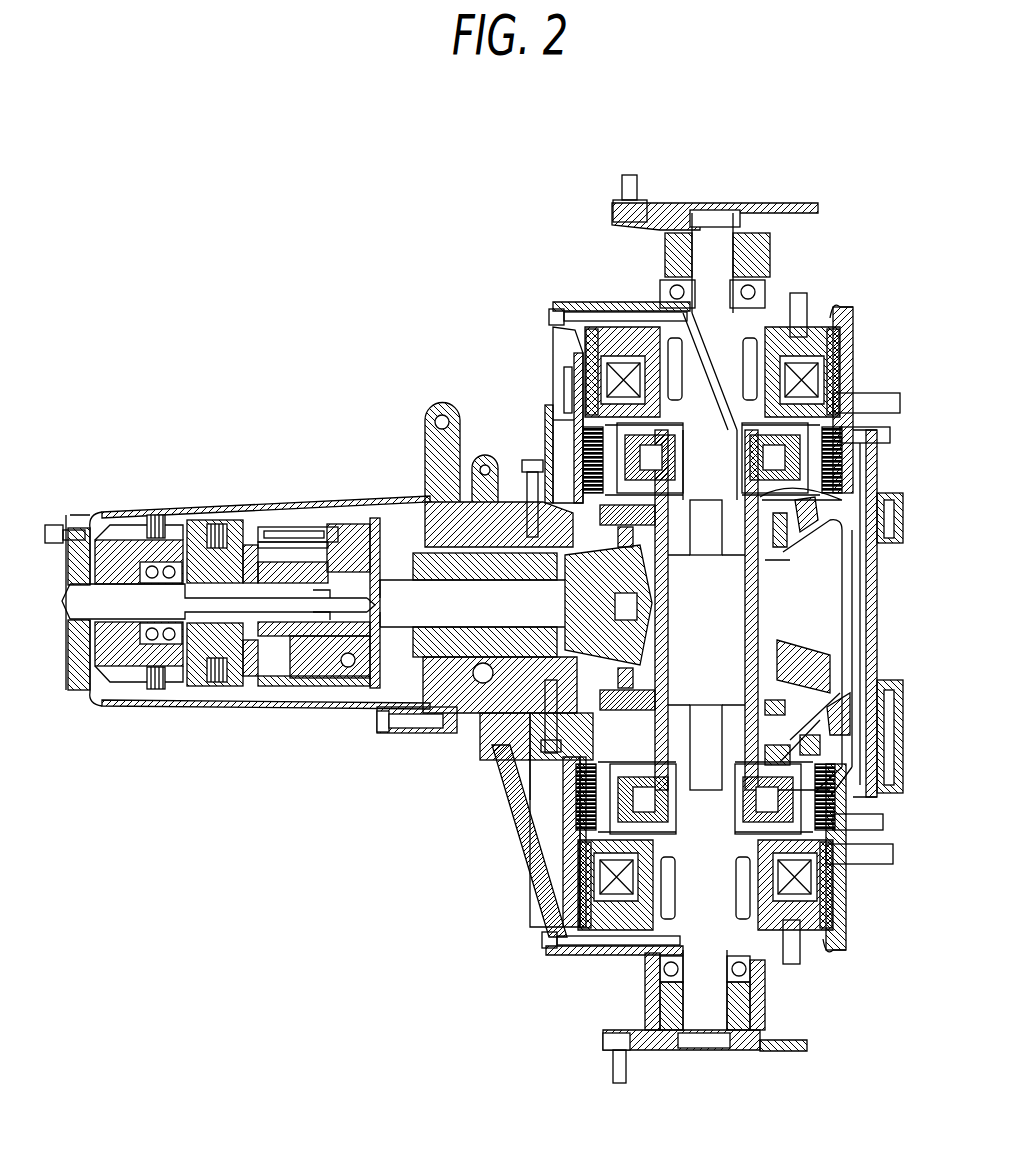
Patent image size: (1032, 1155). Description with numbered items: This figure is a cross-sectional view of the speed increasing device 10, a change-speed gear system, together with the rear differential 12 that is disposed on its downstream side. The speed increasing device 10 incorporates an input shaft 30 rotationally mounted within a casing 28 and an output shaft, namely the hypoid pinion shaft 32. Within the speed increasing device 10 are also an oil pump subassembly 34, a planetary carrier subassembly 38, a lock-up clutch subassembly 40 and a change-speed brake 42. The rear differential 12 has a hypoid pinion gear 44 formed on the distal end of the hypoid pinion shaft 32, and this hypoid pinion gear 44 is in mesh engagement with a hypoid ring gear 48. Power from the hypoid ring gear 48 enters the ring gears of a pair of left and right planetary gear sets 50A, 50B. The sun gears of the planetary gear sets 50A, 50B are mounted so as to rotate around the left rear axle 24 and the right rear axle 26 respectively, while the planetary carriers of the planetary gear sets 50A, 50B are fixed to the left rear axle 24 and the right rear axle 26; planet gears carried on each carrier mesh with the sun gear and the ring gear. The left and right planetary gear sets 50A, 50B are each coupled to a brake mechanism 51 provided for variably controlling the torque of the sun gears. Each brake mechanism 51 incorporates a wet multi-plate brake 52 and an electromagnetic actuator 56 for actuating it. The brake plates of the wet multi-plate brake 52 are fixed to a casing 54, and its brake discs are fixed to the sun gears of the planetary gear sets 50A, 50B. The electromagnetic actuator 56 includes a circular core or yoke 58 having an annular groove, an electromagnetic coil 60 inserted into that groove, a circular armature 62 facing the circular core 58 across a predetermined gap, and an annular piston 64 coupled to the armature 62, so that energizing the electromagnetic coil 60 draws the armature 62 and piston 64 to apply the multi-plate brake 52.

The speed increasing device 10 is at (300, 490).
The rear differential 12 is at (520, 445).
The left rear axle 24 is at (705, 1020).
The right rear axle 26 is at (713, 240).
The casing 28 is at (342, 505).
The input shaft 30 is at (118, 610).
The output shaft (hypoid pinion shaft) 32 is at (415, 605).
The oil pump subassembly 34 is at (345, 700).
The planetary carrier subassembly 38 is at (285, 700).
The lock-up clutch subassembly 40 is at (220, 700).
The change-speed brake 42 is at (158, 505).
The hypoid pinion gear 44 is at (640, 590).
The hypoid ring gear 48 is at (762, 625).
The left planetary gear set 50A is at (823, 720).
The right planetary gear set 50B is at (800, 510).
The brake mechanism 51 is at (550, 365).
The wet multi-plate brake 52 is at (568, 450).
The casing 54 is at (490, 780).
The electromagnetic actuator 56 is at (633, 330).
The circular core (yoke) 58 is at (660, 373).
The electromagnetic coil 60 is at (572, 318).
The circular armature 62 is at (612, 330).
The annular piston 64 is at (853, 372).